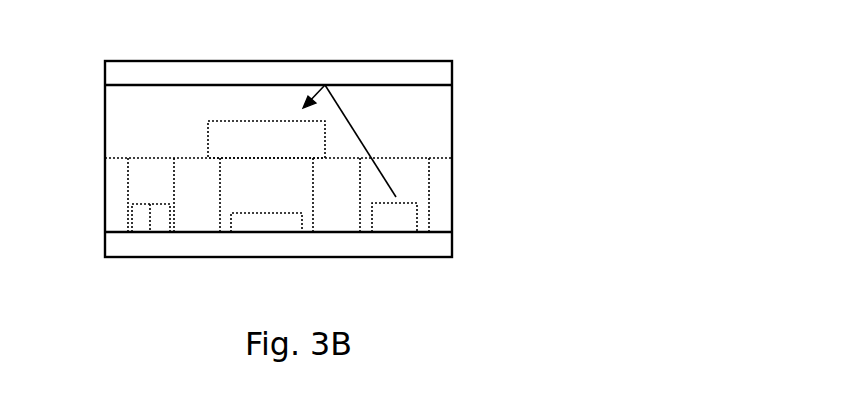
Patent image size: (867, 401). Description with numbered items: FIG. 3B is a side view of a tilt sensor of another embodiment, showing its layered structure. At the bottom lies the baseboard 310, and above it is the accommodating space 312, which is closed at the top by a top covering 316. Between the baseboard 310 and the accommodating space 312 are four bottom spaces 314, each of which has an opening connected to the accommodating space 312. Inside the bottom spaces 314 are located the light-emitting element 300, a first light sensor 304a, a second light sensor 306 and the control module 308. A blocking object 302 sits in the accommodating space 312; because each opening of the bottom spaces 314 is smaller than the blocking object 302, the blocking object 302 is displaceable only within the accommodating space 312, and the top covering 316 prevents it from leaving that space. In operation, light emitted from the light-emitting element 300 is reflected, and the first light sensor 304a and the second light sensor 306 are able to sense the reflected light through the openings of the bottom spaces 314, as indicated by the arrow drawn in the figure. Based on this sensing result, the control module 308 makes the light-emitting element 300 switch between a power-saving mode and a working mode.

The light-emitting element 300 is at (392, 230).
The blocking object 302 is at (208, 138).
The first light sensor 304a is at (272, 232).
The second light sensor 306 is at (160, 232).
The control module 308 is at (140, 232).
The baseboard 310 is at (453, 245).
The accommodating space 312 is at (117, 120).
The bottom spaces 314 is at (138, 183).
The top covering 316 is at (452, 72).